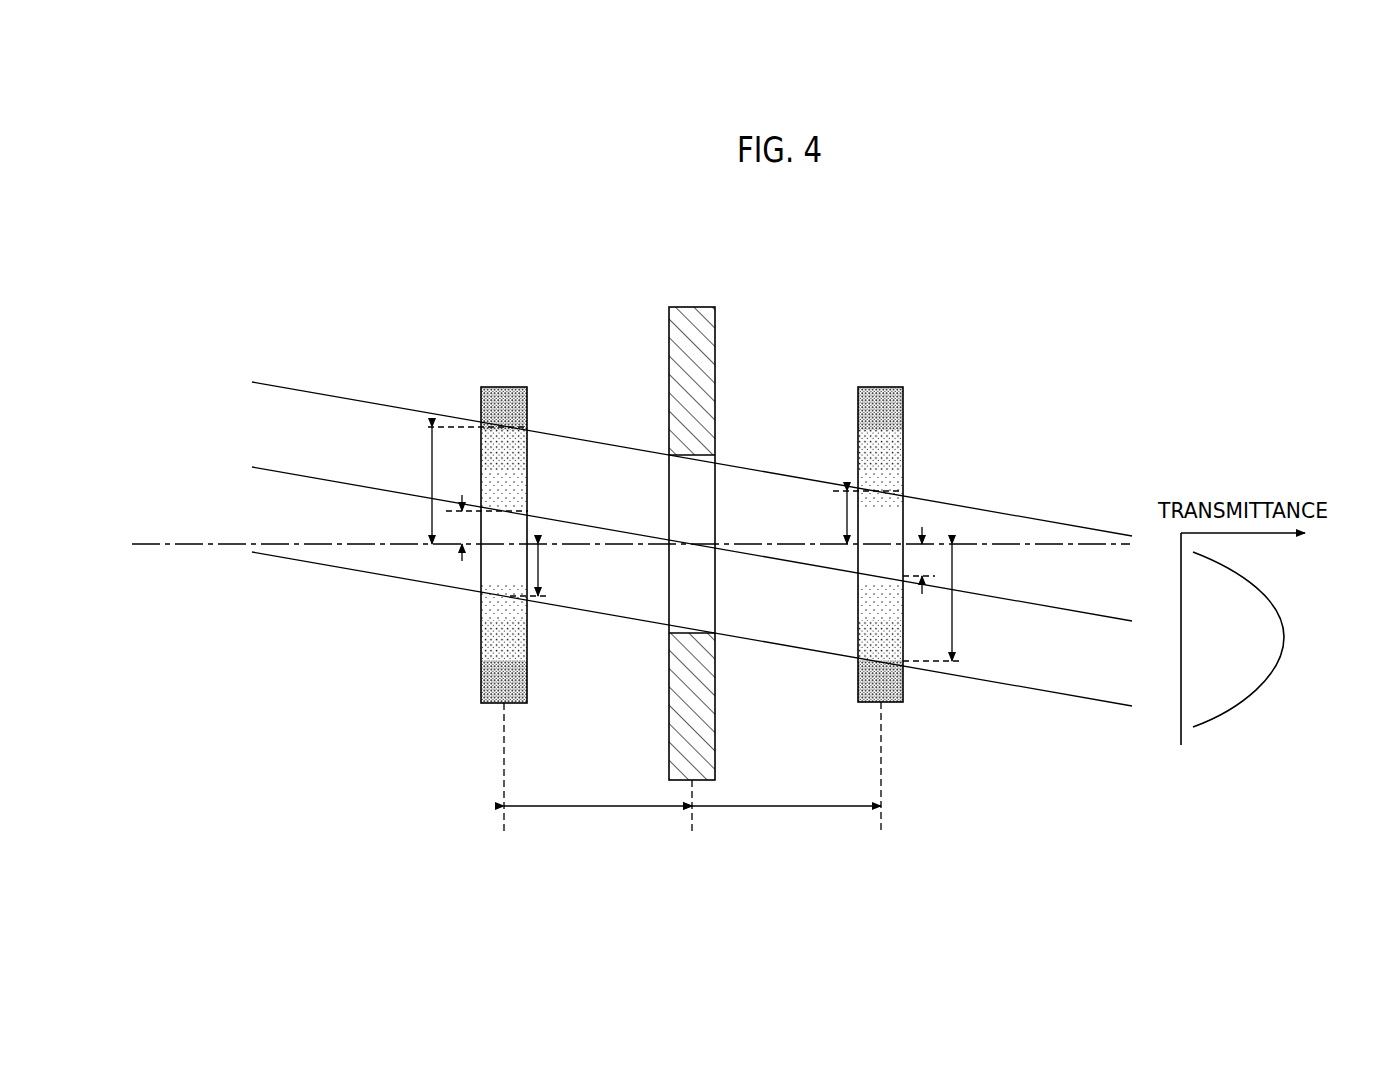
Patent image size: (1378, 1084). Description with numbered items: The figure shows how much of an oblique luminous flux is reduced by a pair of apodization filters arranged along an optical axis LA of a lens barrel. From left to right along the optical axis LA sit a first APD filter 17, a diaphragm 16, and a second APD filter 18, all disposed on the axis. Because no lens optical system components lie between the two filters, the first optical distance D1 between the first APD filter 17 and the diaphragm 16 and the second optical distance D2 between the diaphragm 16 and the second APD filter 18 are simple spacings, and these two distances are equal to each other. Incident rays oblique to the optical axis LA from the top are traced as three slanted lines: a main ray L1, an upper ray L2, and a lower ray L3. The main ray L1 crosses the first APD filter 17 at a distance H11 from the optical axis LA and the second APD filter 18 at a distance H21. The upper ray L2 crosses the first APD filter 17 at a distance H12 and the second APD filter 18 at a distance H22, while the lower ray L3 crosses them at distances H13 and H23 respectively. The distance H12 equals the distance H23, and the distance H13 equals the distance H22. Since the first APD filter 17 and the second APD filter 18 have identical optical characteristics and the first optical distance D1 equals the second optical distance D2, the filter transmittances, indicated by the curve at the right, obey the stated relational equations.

The diaphragm 16 is at (692, 307).
The first apodization filter 17 is at (502, 387).
The second apodization filter 18 is at (882, 387).
The optical axis LA is at (188, 547).
The main ray L1 is at (300, 475).
The upper ray L2 is at (300, 390).
The lower ray L3 is at (368, 573).
The distance H11 is at (462, 527).
The distance H12 is at (430, 456).
The distance H13 is at (540, 570).
The distance H21 is at (922, 563).
The distance H22 is at (845, 520).
The distance H23 is at (955, 632).
The first optical distance D1 is at (598, 820).
The second optical distance D2 is at (786, 820).